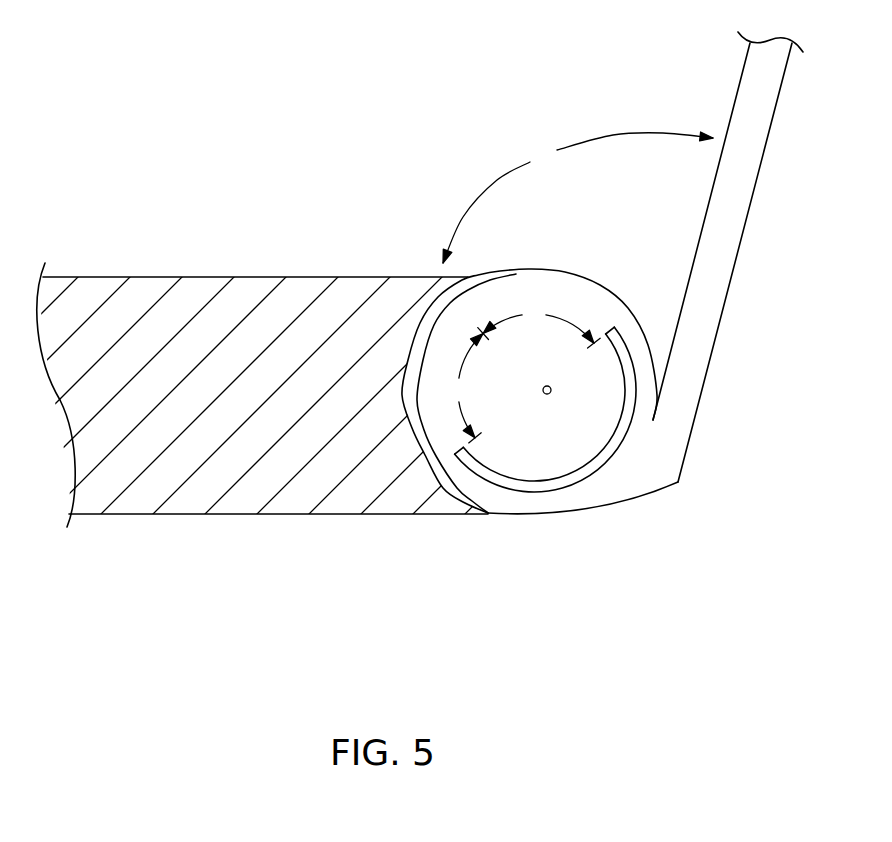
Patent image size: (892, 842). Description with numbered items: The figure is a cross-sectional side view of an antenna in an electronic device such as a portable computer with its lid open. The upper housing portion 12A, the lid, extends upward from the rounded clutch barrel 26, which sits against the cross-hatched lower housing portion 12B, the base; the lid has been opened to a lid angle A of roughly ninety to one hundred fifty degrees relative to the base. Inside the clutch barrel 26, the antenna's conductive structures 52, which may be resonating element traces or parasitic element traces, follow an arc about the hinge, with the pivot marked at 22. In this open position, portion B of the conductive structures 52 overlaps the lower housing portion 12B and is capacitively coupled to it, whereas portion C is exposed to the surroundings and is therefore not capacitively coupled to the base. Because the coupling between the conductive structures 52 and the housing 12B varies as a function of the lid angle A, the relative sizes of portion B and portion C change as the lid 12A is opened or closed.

The upper housing portion 12A is at (723, 268).
The lower housing portion 12B is at (186, 505).
The pivot axis 22 is at (552, 390).
The clutch barrel 26 is at (600, 525).
The conductive structures 52 is at (543, 288).
The lid angle A is at (578, 197).
The portion B of conductive antenna structures B is at (469, 385).
The portion C of conductive antenna structures C is at (541, 325).